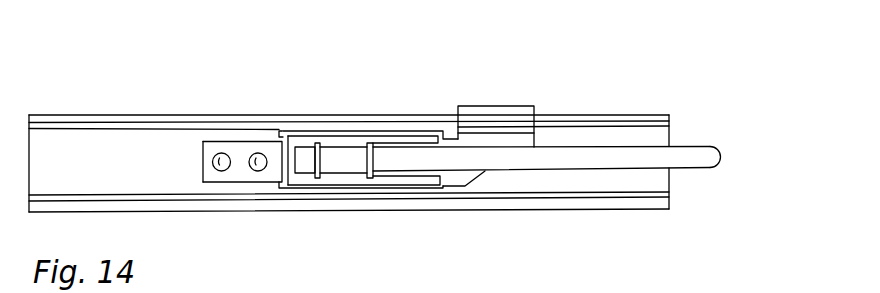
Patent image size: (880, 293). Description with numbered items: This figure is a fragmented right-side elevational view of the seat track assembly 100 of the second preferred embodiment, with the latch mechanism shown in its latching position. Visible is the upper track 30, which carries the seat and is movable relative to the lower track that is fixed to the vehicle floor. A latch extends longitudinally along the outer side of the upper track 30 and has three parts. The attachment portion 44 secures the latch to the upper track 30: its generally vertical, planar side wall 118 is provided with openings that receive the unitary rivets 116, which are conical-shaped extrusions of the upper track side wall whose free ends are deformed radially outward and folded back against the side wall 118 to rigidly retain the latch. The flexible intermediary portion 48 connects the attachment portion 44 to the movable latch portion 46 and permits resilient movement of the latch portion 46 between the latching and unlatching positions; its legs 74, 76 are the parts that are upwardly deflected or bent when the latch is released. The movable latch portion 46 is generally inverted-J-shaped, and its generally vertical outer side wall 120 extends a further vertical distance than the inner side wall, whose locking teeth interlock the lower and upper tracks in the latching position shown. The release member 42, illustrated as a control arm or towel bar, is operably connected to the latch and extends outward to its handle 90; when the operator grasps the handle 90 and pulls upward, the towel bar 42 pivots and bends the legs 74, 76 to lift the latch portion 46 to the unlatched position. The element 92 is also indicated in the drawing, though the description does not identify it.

The seat track assembly 100 is at (118, 73).
The upper track 30 is at (617, 115).
The attachment portion 44 is at (228, 141).
The side wall 118 is at (203, 170).
The unitary rivets 116 is at (219, 172).
The flexible intermediary portion 48 is at (358, 133).
The leg 74 is at (407, 133).
The leg 76 is at (389, 190).
The movable latch portion 46 is at (500, 106).
The outer side wall 120 is at (522, 135).
The release member 42 is at (714, 146).
The handle 90 is at (726, 163).
The tapered lip 92 is at (635, 168).